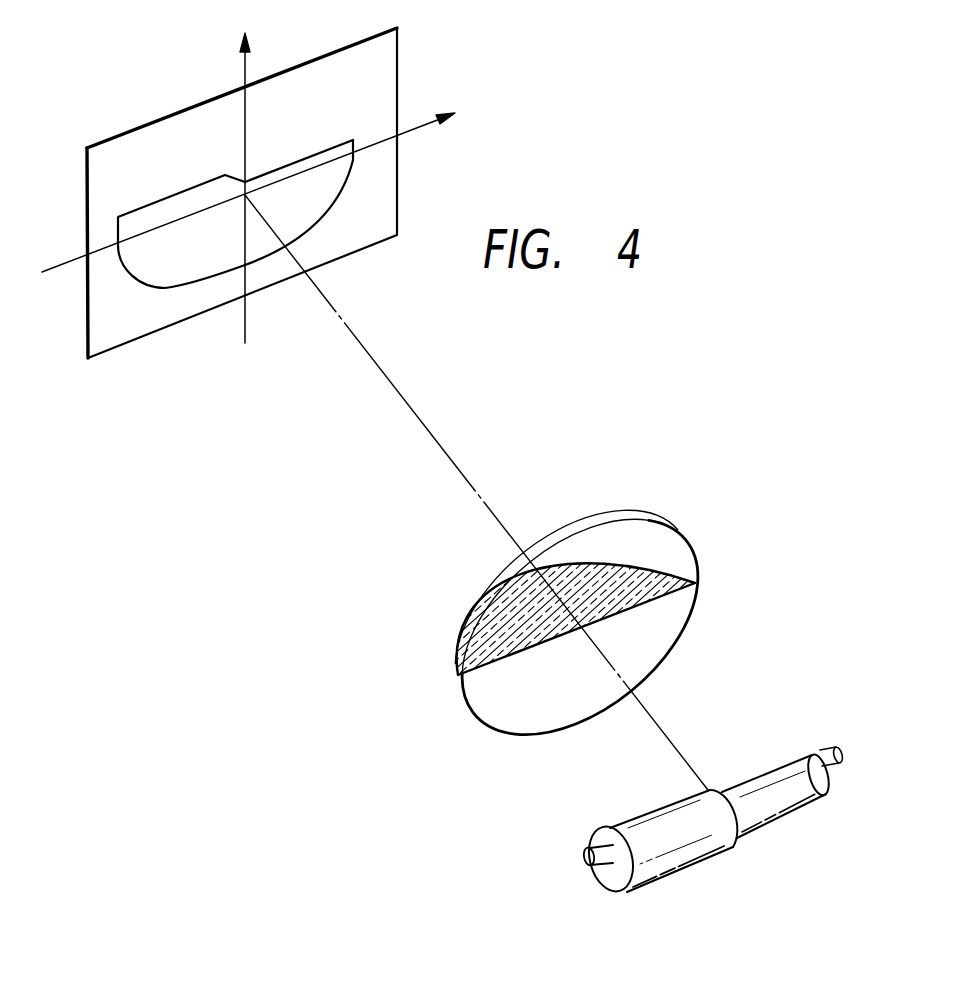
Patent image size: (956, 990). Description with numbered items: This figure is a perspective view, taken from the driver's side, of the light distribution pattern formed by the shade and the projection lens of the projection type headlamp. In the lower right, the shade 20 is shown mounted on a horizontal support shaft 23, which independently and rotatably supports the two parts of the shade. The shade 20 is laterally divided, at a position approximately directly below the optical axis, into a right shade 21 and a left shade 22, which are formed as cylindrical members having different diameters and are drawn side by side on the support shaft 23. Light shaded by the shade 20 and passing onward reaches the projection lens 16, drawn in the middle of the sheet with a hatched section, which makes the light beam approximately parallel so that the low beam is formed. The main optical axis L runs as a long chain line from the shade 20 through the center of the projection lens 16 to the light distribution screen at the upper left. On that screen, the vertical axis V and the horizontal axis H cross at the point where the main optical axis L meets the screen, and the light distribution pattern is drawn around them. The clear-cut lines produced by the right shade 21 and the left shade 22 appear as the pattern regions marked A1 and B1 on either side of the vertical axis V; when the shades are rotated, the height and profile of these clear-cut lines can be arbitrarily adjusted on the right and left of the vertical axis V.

The projection lens 16 is at (680, 610).
The shade 20 is at (708, 768).
The right shade 21 is at (787, 770).
The left shade 22 is at (679, 800).
The horizontal support shaft 23 is at (605, 846).
The rotation range limit of the right shade A1 is at (193, 186).
The rotation range limit of the left shade B1 is at (330, 149).
The main optical axis L is at (443, 430).
The vertical axis V is at (245, 172).
The horizontal axis H is at (262, 182).